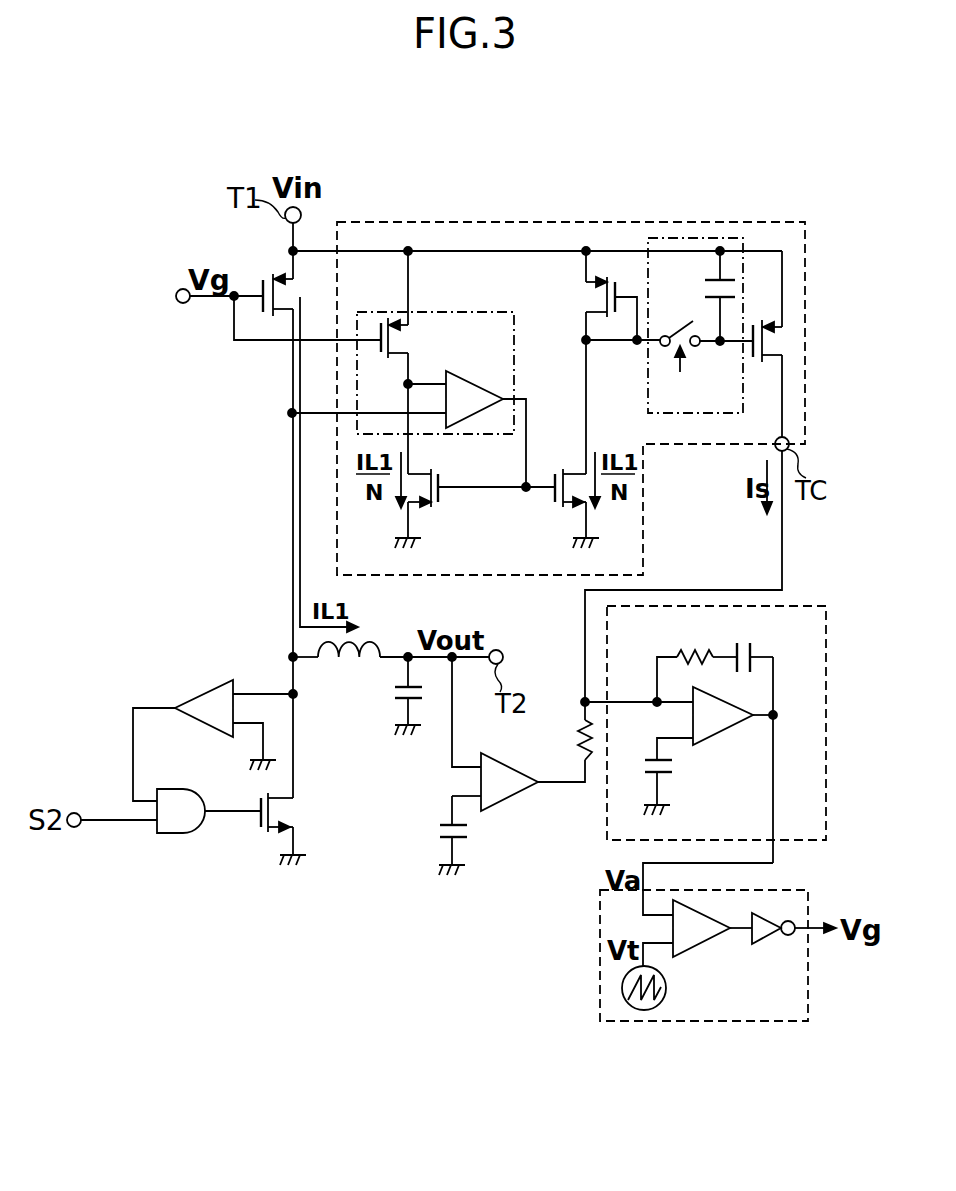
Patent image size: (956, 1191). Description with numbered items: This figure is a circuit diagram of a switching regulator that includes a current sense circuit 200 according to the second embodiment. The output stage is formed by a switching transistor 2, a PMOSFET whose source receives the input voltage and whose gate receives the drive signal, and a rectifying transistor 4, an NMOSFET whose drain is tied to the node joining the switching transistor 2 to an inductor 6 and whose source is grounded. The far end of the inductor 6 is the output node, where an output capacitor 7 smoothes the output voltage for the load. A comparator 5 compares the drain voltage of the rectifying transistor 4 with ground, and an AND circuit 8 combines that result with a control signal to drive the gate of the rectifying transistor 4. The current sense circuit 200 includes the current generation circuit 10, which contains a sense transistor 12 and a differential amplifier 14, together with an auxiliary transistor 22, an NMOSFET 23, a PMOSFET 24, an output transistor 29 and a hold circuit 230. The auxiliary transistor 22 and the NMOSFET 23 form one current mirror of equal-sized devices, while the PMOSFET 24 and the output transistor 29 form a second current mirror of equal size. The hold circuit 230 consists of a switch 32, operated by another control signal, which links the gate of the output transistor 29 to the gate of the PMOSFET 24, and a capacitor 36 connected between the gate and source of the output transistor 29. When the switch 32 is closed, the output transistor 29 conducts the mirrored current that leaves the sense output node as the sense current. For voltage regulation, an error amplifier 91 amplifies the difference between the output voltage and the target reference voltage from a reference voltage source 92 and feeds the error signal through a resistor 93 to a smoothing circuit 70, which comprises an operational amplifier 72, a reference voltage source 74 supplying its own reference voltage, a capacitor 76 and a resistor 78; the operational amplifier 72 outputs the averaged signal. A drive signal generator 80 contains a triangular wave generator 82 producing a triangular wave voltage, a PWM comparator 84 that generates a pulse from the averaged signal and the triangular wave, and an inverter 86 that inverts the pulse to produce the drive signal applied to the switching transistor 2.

The switching transistor 2 is at (284, 281).
The rectifying transistor 4 is at (284, 800).
The comparator 5 is at (207, 733).
The inductor 6 is at (383, 646).
The output capacitor 7 is at (404, 712).
The AND circuit 8 is at (173, 835).
The current generation circuit 10 is at (515, 343).
The sense transistor 12 is at (404, 327).
The differential amplifier 14 is at (483, 418).
The auxiliary transistor 22 is at (440, 500).
The NMOSFET 23 is at (553, 500).
The PMOSFET 24 is at (596, 283).
The output transistor 29 is at (768, 357).
The switch 32 is at (681, 334).
The capacitor 36 is at (732, 280).
The smoothing circuit 70 is at (806, 610).
The operational amplifier 72 is at (736, 736).
The reference voltage source 74 is at (664, 773).
The capacitor 76 is at (753, 650).
The resistor 78 is at (688, 660).
The drive signal generator 80 is at (808, 904).
The triangular wave generator 82 is at (622, 986).
The PWM comparator 84 is at (710, 947).
The inverter 86 is at (770, 944).
The error amplifier 91 is at (515, 800).
The reference voltage source 92 is at (440, 828).
The resistor 93 is at (580, 738).
The current sense circuit 200 is at (608, 226).
The hold circuit 230 is at (712, 238).